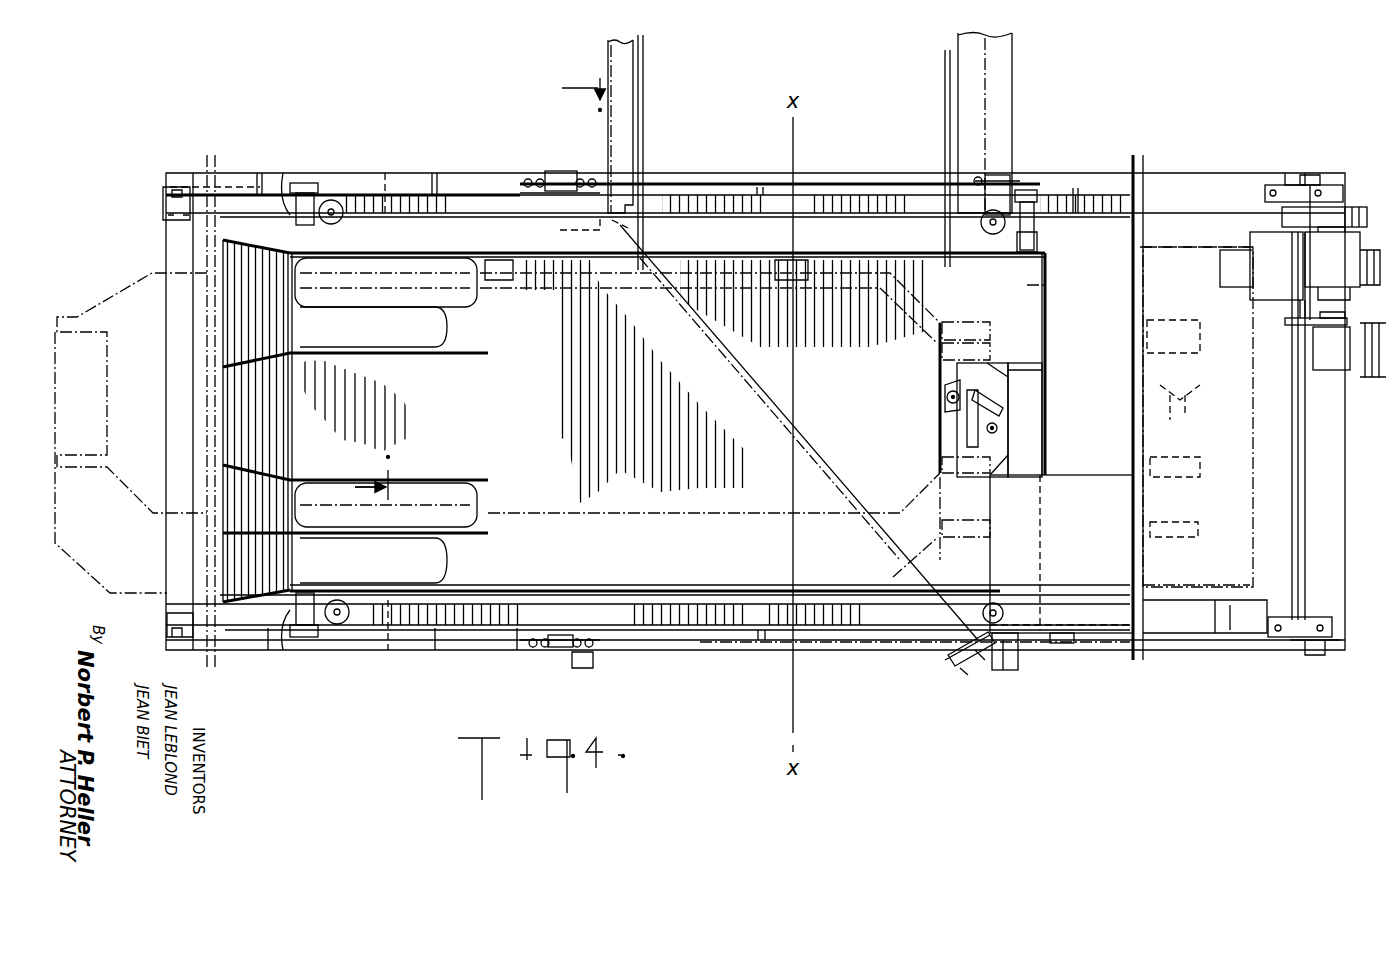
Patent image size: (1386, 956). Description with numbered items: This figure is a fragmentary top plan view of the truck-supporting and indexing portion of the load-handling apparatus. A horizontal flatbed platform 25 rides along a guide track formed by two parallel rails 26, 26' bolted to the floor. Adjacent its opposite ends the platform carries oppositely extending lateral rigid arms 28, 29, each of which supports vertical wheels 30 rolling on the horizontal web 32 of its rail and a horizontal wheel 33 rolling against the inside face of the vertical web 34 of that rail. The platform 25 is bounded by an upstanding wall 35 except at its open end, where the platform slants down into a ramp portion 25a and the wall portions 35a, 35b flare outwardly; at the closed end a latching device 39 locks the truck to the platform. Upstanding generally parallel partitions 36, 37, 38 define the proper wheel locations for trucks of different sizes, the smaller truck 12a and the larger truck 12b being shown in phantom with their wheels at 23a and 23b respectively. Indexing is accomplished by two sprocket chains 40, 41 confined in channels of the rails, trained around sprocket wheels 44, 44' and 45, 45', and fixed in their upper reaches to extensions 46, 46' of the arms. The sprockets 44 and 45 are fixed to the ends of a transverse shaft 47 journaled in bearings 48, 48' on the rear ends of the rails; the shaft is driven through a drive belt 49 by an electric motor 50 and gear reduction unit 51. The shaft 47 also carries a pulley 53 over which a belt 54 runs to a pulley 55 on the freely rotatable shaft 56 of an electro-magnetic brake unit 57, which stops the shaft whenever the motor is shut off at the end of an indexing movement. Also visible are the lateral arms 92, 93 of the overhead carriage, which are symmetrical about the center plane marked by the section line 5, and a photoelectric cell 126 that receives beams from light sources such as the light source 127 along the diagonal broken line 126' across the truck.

The section line 5- 5 is at (467, 292).
The smaller truck 12a is at (700, 515).
The larger truck 12b is at (660, 308).
The wheels of the smaller truck 23a is at (475, 305).
The wheels of the larger truck 23b is at (457, 357).
The platform 25 is at (1047, 285).
The ramp portion 25a is at (238, 430).
The rail 26 is at (648, 641).
The rail 26' is at (755, 176).
The lateral rigid arm 28 is at (1040, 238).
The lateral rigid arm 29 is at (283, 212).
The vertical wheel 30 is at (306, 188).
The horizontal web 32 is at (712, 205).
The horizontal wheel 33 is at (342, 222).
The vertical web 34 is at (383, 195).
The upstanding wall 35 is at (898, 253).
The wall portion 35a is at (286, 251).
The wall portion 35b is at (240, 602).
The partition 36 is at (478, 354).
The partition 37 is at (480, 477).
The partition 38 is at (487, 534).
The latching device 39 is at (992, 396).
The sprocket chain 40 is at (705, 652).
The sprocket chain 41 is at (726, 182).
The sprocket wheel 44 is at (1316, 667).
The sprocket wheel 44' is at (555, 666).
The sprocket wheel 45 is at (1297, 165).
The sprocket wheel 45' is at (560, 161).
The extension of the arm 46 is at (1010, 669).
The extension of the arm 46' is at (1015, 174).
The transverse rotatable shaft 47 is at (1292, 492).
The bearing 48 is at (1304, 605).
The bearing 48' is at (1327, 224).
The drive belt 49 is at (1355, 205).
The electric motor 50 is at (1253, 295).
The gear reduction unit 51 is at (1343, 273).
The pulley 53 is at (1313, 323).
The belt 54 is at (1318, 340).
The pulley 55 is at (1342, 320).
The freely rotatable shaft 56 is at (1332, 320).
The electro-magnetic brake unit 57 is at (1334, 367).
The lateral arm 92 is at (945, 118).
The lateral arm 93 is at (645, 83).
The photoelectric cell 126 is at (769, 429).
The broken line 126' is at (770, 409).
The light source 127 is at (972, 672).